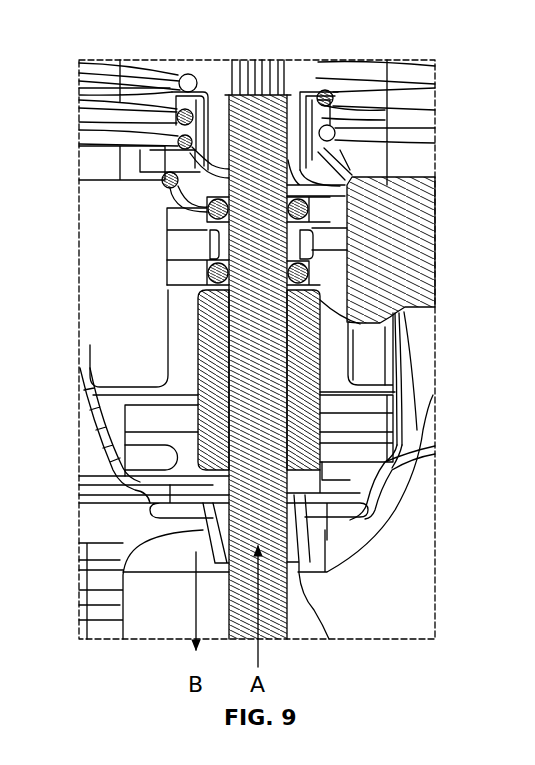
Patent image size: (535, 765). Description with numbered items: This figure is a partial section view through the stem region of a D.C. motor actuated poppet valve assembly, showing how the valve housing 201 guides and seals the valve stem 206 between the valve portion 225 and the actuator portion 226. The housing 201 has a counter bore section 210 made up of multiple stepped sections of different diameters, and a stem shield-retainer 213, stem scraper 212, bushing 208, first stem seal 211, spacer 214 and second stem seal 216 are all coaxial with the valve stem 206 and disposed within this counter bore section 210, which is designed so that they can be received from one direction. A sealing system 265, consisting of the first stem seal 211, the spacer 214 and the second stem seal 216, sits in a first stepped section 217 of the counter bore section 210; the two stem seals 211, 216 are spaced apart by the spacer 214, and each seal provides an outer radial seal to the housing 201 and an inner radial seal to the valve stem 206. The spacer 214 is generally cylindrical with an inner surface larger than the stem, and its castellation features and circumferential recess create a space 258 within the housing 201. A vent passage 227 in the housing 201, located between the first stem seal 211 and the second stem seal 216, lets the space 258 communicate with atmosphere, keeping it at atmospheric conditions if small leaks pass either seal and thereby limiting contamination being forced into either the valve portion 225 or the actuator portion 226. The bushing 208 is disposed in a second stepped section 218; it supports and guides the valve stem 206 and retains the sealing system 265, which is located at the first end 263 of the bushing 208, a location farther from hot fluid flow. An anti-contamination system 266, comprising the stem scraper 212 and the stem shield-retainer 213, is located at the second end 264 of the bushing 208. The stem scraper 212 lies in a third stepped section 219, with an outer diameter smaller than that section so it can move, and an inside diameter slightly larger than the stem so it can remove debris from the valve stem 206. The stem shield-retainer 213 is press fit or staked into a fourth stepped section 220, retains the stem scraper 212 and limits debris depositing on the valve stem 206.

The valve housing 201 is at (94, 608).
The valve stem 206 is at (282, 625).
The bushing 208 is at (205, 354).
The counter bore section 210 is at (329, 407).
The first stem seal 211 is at (312, 299).
The stem scraper 212 is at (180, 482).
The stem shield-retainer 213 is at (206, 527).
The spacer 214 is at (318, 276).
The second stem seal 216 is at (334, 233).
The first stepped section 217 is at (197, 287).
The second stepped section 218 is at (201, 308).
The third stepped section 219 is at (354, 480).
The fourth stepped section 220 is at (354, 492).
The valve portion 225 is at (342, 593).
The actuator portion 226 is at (390, 86).
The vent passage 227 is at (186, 237).
The space 258 is at (209, 244).
The first end 263 is at (399, 325).
The second end 264 is at (213, 467).
The sealing system 265 is at (303, 256).
The anti-contamination system 266 is at (143, 504).